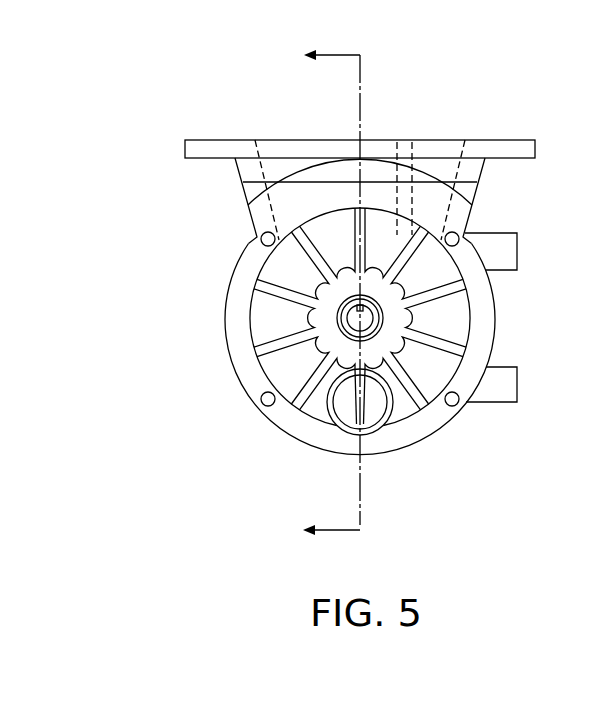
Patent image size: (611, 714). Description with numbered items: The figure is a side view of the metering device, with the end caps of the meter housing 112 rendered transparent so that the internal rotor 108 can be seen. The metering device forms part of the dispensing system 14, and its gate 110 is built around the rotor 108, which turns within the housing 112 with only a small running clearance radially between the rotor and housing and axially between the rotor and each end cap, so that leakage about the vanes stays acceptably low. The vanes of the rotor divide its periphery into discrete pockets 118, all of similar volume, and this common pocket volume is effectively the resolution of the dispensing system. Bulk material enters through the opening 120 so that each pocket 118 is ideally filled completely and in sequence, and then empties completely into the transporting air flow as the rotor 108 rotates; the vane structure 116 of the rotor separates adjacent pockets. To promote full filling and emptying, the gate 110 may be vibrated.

The pump head assembly 14 is at (151, 204).
The opening 120 is at (314, 135).
The gate 110 is at (195, 368).
The housing 112 is at (447, 425).
The ribs 116 is at (268, 270).
The pocket 118 is at (281, 372).
The rotor 108 is at (396, 401).